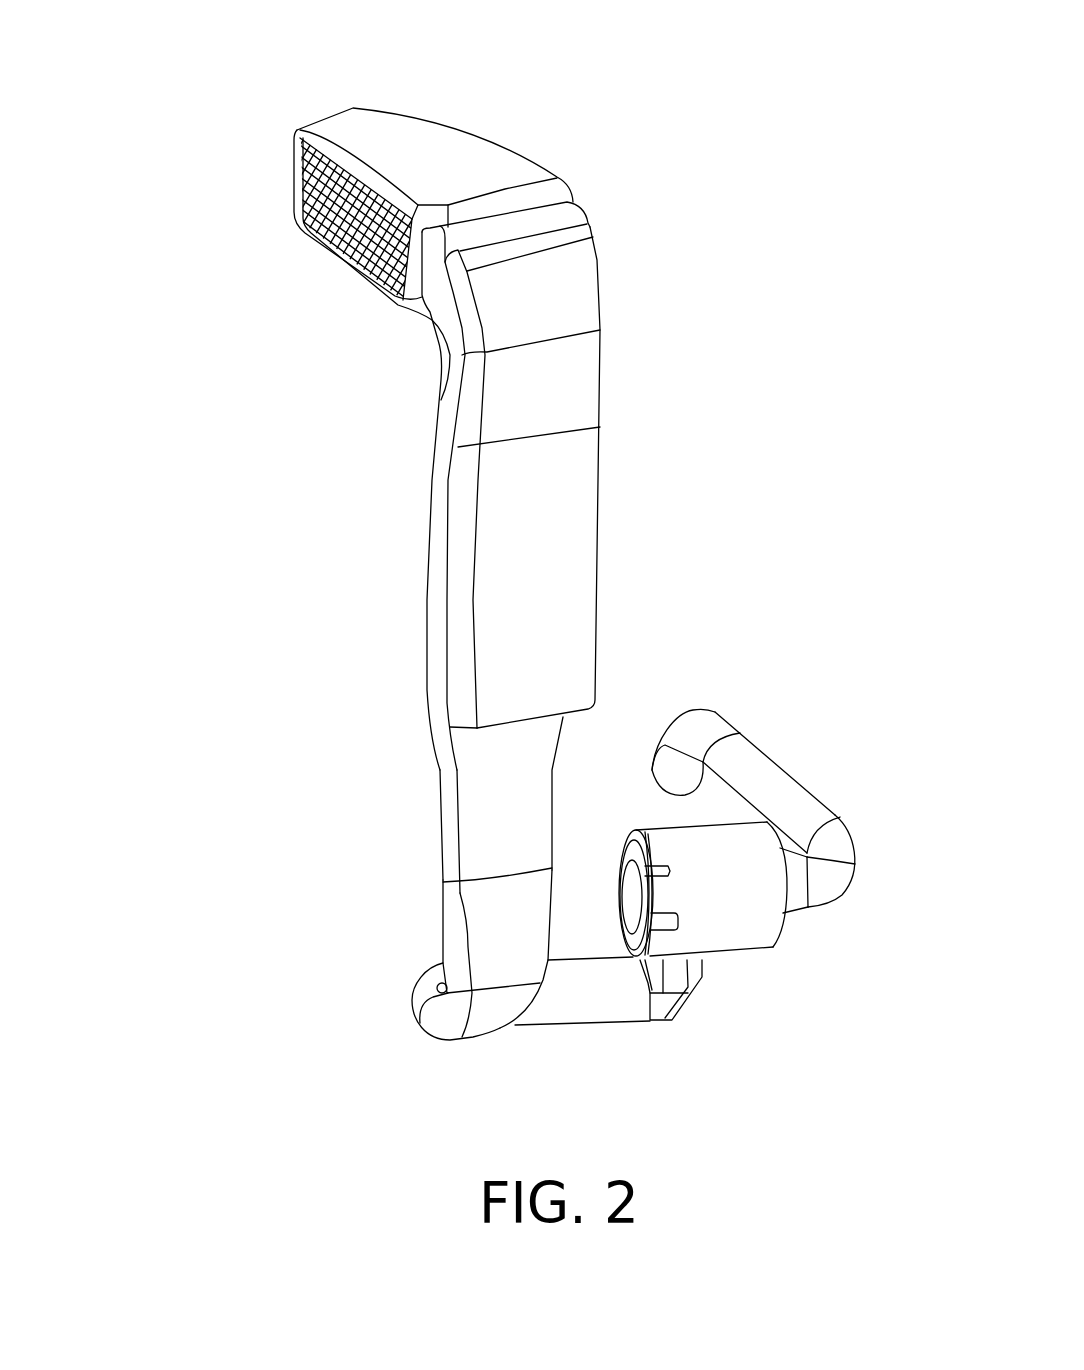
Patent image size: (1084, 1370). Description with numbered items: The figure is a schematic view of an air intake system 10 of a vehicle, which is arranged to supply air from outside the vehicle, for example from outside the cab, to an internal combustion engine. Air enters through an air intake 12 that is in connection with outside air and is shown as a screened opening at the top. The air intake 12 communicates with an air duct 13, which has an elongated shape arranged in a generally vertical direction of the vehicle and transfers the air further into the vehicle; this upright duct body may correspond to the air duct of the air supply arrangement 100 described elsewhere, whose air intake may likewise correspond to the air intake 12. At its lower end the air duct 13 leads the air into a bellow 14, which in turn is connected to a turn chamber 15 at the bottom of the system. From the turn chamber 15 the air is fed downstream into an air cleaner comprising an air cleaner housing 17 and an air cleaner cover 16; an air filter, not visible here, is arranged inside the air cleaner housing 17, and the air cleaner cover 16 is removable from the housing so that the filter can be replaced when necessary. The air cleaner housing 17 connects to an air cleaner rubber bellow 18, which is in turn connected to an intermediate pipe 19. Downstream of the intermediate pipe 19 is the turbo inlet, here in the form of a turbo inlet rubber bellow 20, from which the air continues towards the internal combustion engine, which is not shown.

The air intake system 10 is at (240, 74).
The air intake 12 is at (345, 236).
The air duct 13 is at (510, 802).
The bellow 14 is at (497, 938).
The turn chamber 15 is at (687, 1010).
The air cleaner cover 16 is at (630, 898).
The air cleaner housing 17 is at (730, 892).
The air cleaner rubber bellow 18 is at (797, 888).
The intermediate pipe 19 is at (773, 790).
The turbo inlet rubber bellow 20 is at (674, 770).
The air supply arrangement 100 is at (533, 553).